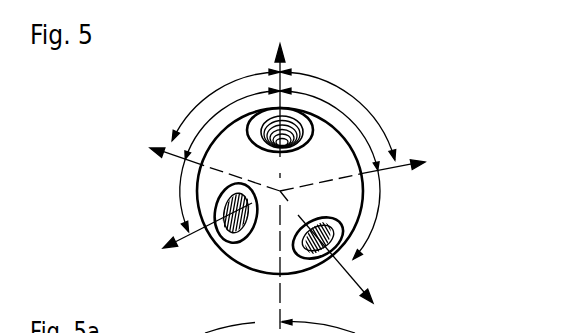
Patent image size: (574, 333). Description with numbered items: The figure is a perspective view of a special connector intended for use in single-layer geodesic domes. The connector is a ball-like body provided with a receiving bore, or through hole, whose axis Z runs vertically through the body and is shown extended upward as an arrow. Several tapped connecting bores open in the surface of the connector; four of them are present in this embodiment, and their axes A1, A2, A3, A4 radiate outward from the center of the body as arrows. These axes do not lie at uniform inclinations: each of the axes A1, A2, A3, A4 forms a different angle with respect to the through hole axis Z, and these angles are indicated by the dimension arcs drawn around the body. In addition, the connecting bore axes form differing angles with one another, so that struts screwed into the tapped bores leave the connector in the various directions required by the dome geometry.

The through hole axis Z is at (280, 89).
The axis of first tapped connecting bore A1 is at (190, 243).
The axis of second tapped connecting bore A2 is at (349, 269).
The axis of third tapped connecting bore A3 is at (407, 167).
The axis of fourth tapped connecting bore A4 is at (159, 146).